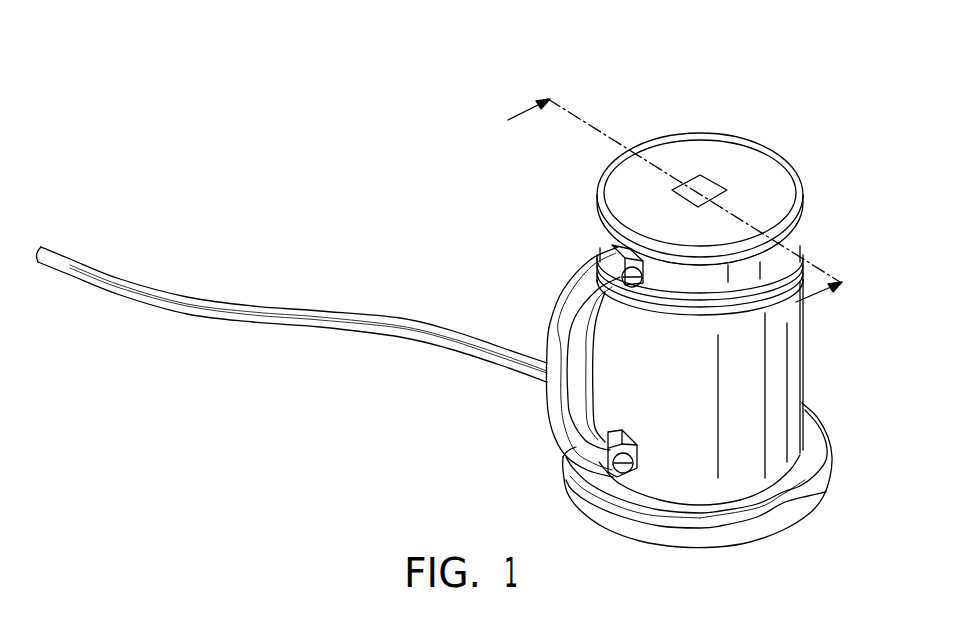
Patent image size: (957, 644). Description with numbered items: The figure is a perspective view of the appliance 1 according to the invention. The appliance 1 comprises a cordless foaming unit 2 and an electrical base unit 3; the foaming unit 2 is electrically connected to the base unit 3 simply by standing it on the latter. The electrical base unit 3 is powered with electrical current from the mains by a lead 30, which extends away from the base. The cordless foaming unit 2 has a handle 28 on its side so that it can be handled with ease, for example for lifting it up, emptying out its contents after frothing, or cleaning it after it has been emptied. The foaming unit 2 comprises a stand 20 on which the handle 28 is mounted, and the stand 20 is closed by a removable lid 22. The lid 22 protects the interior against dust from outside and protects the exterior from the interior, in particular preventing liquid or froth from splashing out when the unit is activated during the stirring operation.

The appliance 1 is at (460, 280).
The cordless foaming unit 2 is at (682, 296).
The electrical base unit 3 is at (850, 440).
The stand 20 is at (790, 345).
The removable lid 22 is at (738, 153).
The handle 28 is at (546, 416).
The lead 30 is at (282, 335).